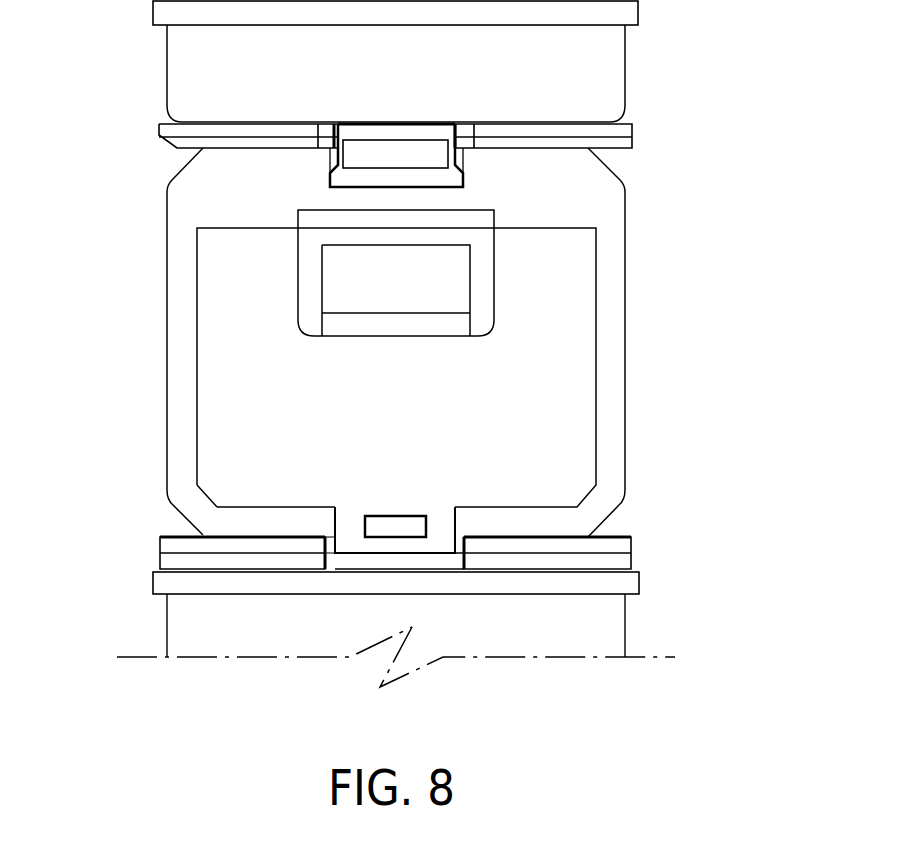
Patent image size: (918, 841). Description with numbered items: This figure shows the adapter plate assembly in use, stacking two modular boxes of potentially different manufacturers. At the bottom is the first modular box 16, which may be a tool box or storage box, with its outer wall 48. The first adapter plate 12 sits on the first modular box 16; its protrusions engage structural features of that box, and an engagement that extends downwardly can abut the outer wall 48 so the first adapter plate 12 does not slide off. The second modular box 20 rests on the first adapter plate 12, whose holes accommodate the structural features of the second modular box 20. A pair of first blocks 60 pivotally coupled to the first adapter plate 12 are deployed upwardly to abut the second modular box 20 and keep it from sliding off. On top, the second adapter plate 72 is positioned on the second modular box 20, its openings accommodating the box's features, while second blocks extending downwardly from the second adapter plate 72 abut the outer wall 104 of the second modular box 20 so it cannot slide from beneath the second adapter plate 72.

The second adapter plate 72 is at (162, 122).
The second modular box 20 is at (173, 330).
The outer wall 104 is at (557, 298).
The first blocks 60 is at (447, 507).
The first adapter plate 12 is at (633, 545).
The first modular box 16 is at (167, 632).
The outer wall 48 is at (585, 633).